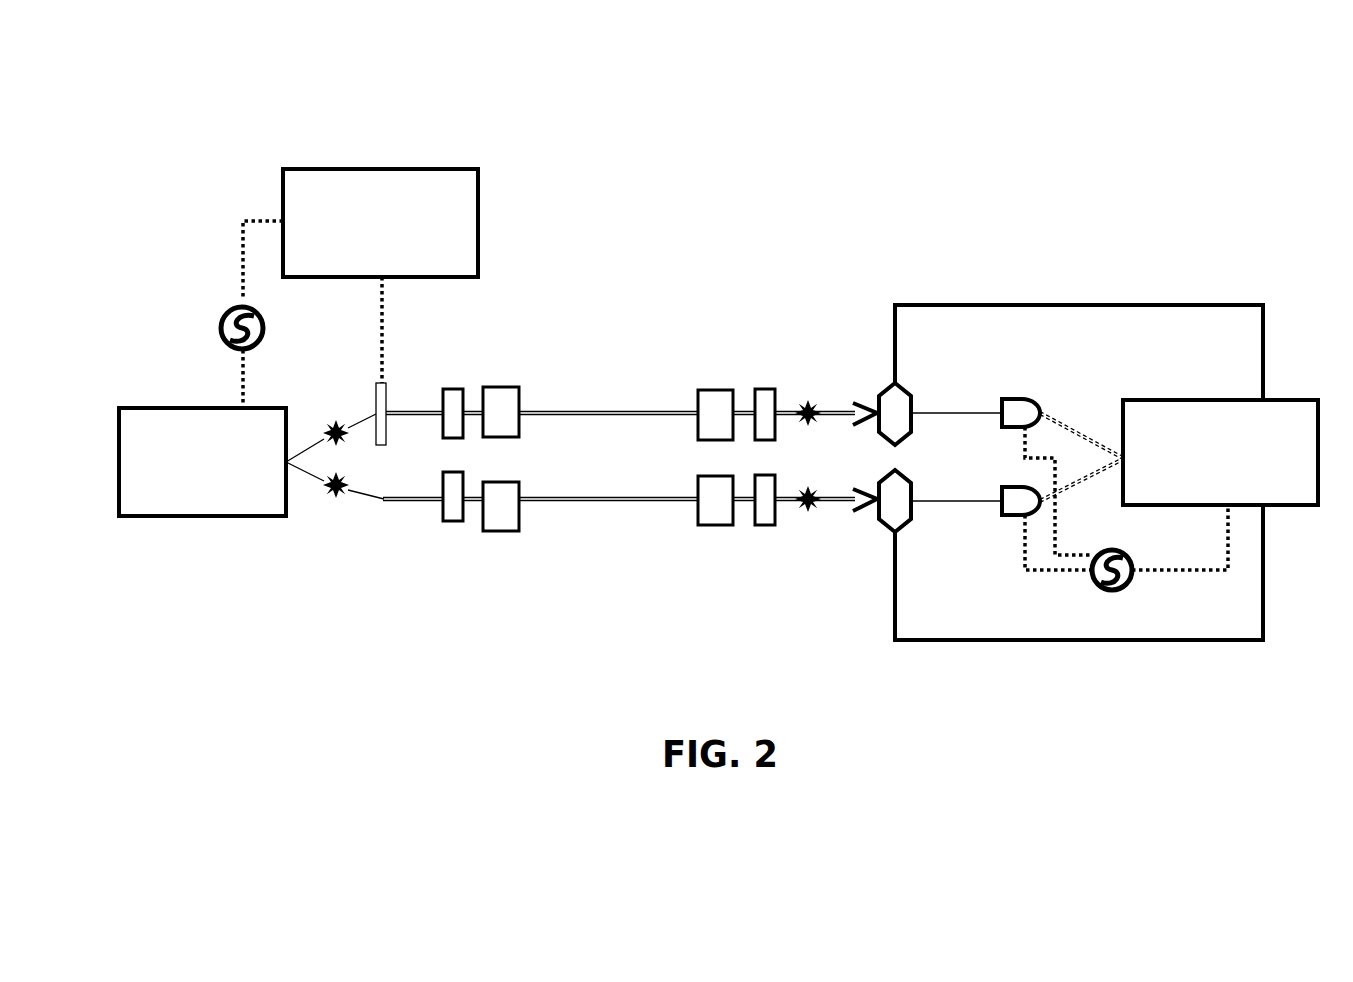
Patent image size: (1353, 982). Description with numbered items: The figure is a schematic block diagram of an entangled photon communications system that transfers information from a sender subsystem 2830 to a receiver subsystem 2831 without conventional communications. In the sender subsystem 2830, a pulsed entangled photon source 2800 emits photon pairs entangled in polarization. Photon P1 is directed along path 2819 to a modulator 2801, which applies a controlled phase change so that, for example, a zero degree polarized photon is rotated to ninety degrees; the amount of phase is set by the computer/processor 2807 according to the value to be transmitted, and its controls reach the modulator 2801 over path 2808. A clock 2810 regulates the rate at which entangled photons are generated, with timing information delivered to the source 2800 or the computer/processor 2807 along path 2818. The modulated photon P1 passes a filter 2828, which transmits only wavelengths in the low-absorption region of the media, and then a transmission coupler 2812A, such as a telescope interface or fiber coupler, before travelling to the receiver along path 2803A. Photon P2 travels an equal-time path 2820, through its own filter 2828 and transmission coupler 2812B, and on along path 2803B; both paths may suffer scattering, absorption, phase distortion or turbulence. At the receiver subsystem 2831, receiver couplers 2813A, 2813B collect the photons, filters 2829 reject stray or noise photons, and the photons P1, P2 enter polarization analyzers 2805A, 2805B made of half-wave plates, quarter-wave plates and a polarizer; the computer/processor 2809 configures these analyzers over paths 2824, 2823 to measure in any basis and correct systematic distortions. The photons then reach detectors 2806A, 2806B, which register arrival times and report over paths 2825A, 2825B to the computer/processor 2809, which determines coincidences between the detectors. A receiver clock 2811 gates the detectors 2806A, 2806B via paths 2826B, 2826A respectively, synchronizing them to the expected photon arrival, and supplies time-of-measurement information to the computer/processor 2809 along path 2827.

The pulsed entangled photon source 2800 is at (170, 400).
The modulator 2801 is at (382, 455).
The path 2803A is at (631, 427).
The path 2803B is at (630, 515).
The polarization analyzer 2805A is at (880, 387).
The polarization analyzer 2805B is at (878, 532).
The detector 2806A is at (975, 398).
The detector 2806B is at (975, 511).
The computer/processor 2807 is at (380, 223).
The path 2808 is at (409, 330).
The computer/processor 2809 is at (1220, 452).
The clock 2810 is at (220, 344).
The clock 2811 is at (1133, 576).
The transmission coupler 2812A is at (530, 401).
The transmission coupler 2812B is at (499, 525).
The receiver coupler 2813A is at (716, 400).
The receiver coupler 2813B is at (716, 521).
The path 2818 is at (237, 231).
The path 2819 is at (415, 405).
The path 2820 is at (402, 512).
The path 2823 is at (992, 650).
The path 2824 is at (1002, 297).
The path 2825A is at (1078, 413).
The path 2825B is at (1095, 490).
The path 2826A is at (1032, 583).
The path 2826B is at (1012, 455).
The path 2827 is at (1227, 583).
The filter 2828 is at (465, 374).
The filter 2829 is at (772, 380).
The sender subsystem 2830 is at (373, 114).
The receiver subsystem 2831 is at (1078, 206).
The photon P1 is at (325, 410).
The photon P2 is at (330, 505).